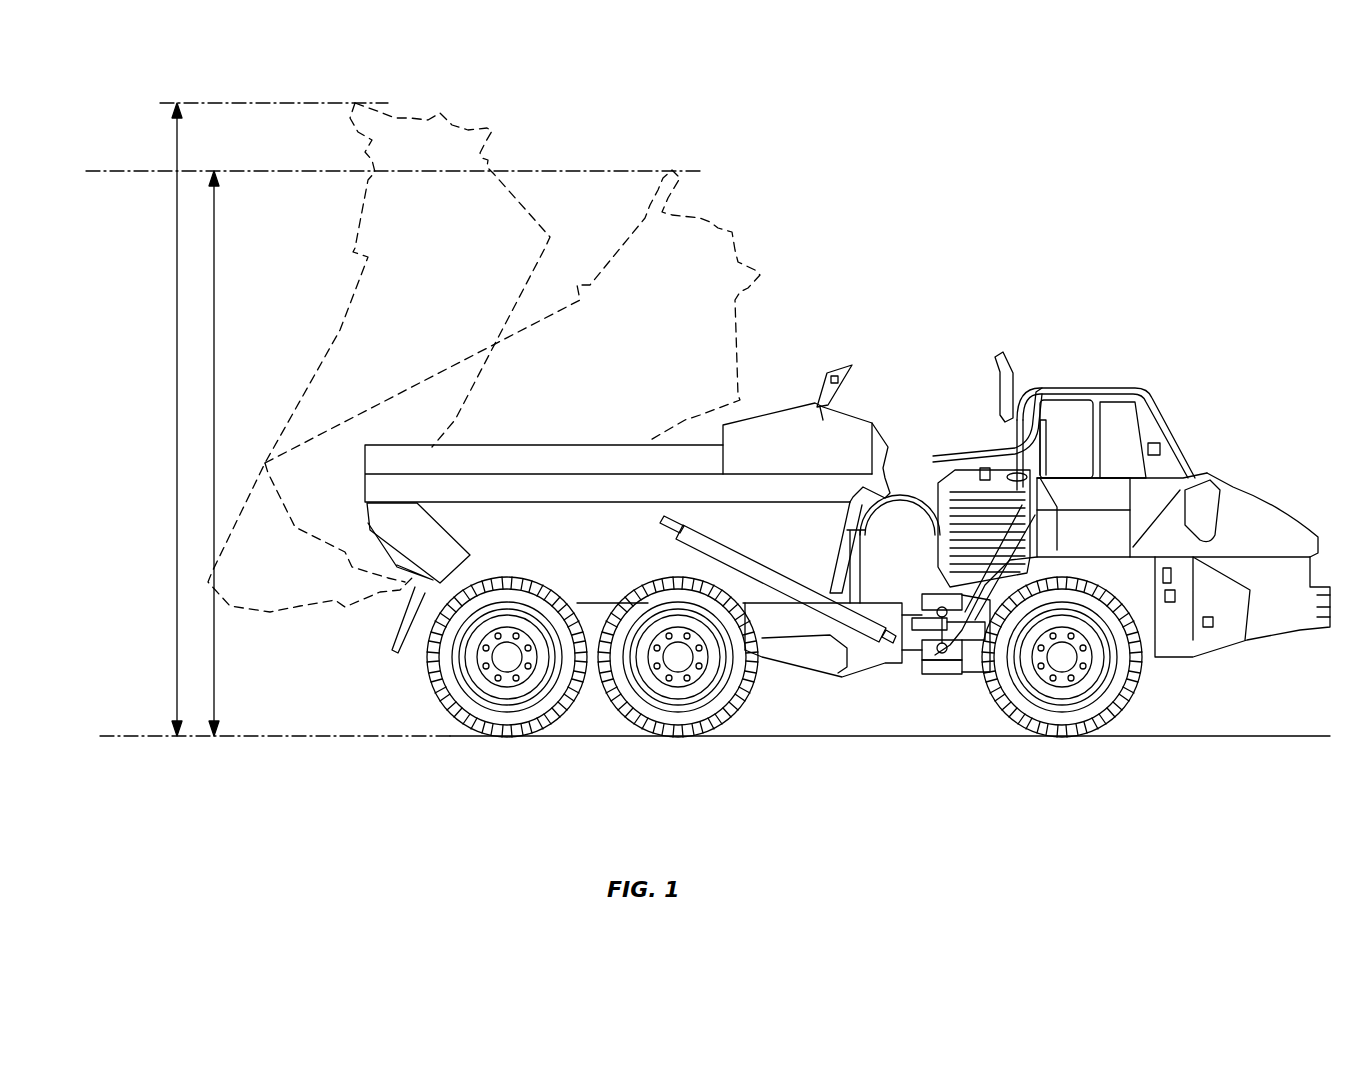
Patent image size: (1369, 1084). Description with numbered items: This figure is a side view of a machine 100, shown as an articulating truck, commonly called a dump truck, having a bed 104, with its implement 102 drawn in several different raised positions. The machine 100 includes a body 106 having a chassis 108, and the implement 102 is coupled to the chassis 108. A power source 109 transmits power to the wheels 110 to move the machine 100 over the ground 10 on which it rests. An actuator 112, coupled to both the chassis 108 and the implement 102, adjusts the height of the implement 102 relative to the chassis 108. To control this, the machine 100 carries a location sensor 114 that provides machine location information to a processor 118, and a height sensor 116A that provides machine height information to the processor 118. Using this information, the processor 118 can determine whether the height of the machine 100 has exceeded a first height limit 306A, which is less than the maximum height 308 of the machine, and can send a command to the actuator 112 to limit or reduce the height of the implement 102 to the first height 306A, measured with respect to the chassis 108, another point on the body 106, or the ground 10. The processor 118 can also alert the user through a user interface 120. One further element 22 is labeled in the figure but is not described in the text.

The machine 100 is at (1124, 157).
The ground 10 is at (876, 737).
The articulation joint 22 is at (1005, 710).
The implement 102 is at (483, 148).
The bed 104 is at (618, 579).
The body 106 is at (1097, 388).
The chassis 108 is at (858, 660).
The power source 109 is at (1237, 510).
The wheels 110 is at (452, 710).
The actuator 112 is at (737, 557).
The location sensor 114 is at (985, 468).
The height sensor 116A is at (852, 366).
The processor 118 is at (1170, 602).
The user interface 120 is at (1150, 393).
The first height limit 306A is at (214, 283).
The maximum height 308 is at (177, 263).